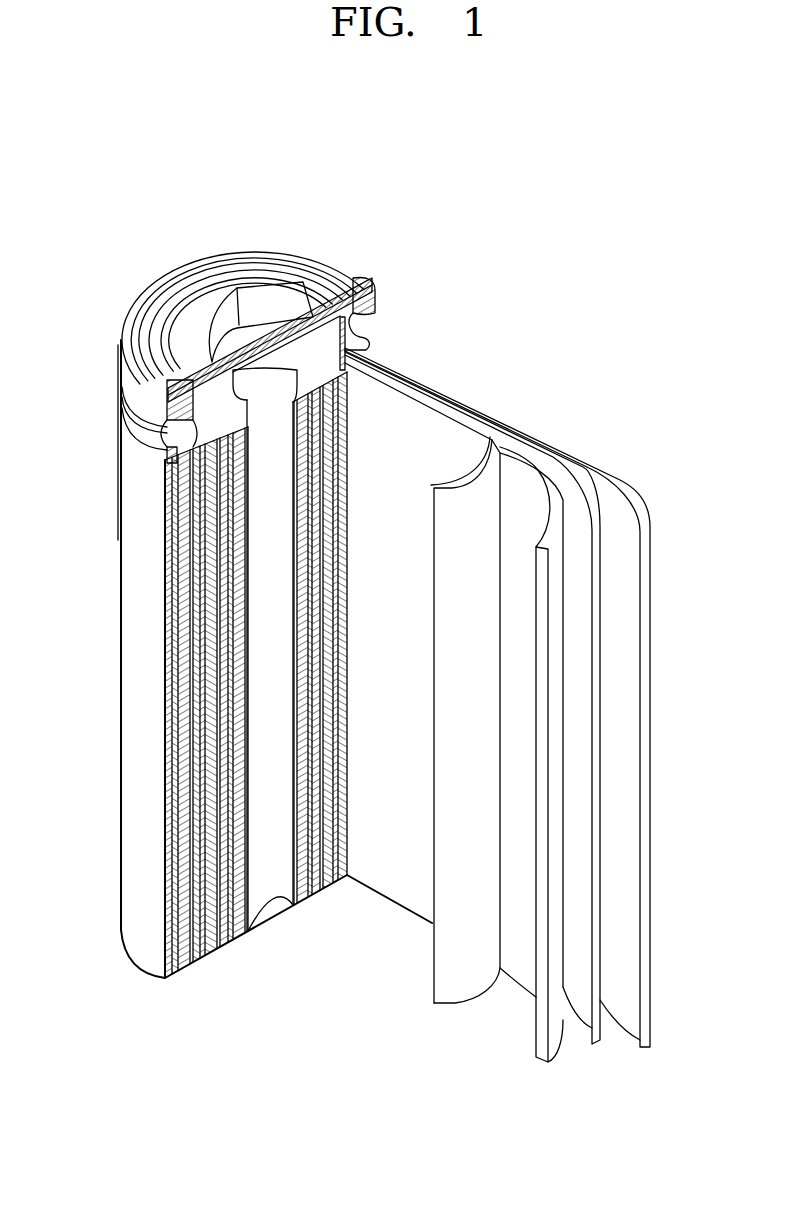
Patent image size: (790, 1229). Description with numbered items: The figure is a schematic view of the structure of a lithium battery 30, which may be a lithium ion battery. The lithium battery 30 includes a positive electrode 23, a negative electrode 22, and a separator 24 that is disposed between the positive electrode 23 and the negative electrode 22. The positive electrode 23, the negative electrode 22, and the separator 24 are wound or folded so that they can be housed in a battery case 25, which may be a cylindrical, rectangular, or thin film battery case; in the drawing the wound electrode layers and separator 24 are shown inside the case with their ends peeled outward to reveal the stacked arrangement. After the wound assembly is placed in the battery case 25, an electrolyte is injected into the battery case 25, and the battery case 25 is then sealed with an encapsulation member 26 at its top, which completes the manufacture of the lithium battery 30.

The lithium battery 30 is at (438, 217).
The battery case 25 is at (126, 659).
The encapsulation member 26 is at (243, 293).
The negative electrode 22 is at (627, 497).
The positive electrode 23 is at (548, 497).
The separator 24 is at (596, 507).